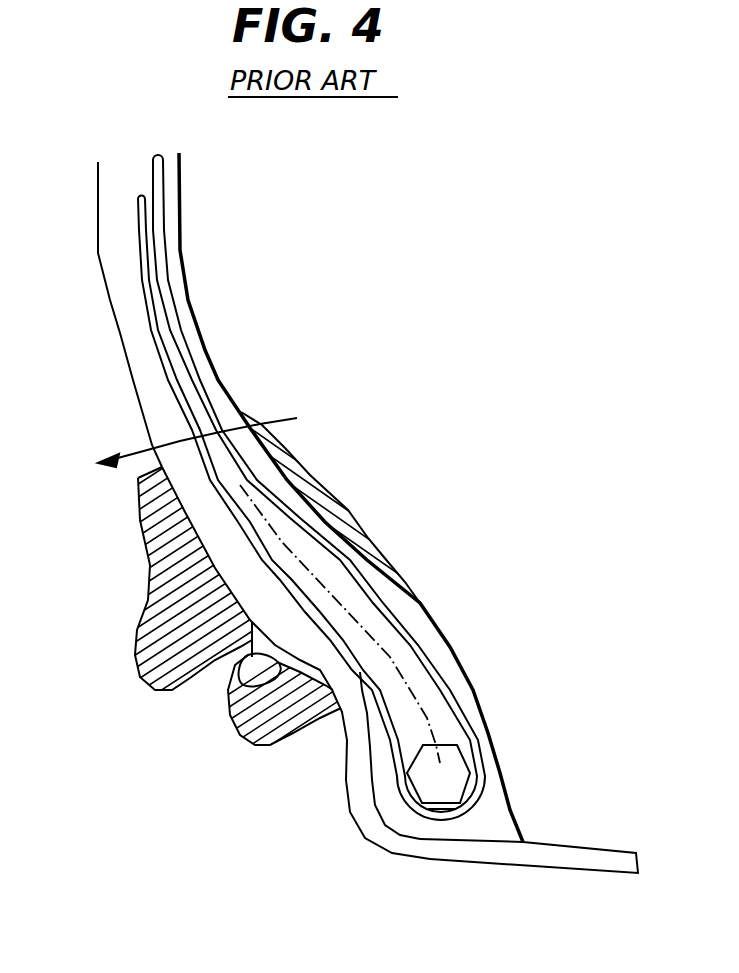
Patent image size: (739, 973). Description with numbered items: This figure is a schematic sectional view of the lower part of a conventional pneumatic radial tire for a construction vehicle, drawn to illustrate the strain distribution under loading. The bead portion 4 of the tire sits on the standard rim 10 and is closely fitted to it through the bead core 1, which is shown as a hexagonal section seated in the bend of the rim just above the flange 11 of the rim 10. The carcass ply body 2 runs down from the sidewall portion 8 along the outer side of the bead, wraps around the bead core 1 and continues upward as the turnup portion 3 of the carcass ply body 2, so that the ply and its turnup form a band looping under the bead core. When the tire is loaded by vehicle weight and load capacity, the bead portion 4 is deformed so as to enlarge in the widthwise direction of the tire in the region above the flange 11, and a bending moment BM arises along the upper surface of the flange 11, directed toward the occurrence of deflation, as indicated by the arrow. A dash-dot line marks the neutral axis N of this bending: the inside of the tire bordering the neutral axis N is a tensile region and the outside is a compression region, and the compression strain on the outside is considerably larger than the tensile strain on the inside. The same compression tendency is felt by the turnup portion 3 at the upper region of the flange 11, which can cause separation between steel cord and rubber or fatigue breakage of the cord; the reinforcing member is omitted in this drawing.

The bead core 1 is at (457, 775).
The carcass ply body 2 is at (400, 614).
The turnup portion 3 is at (155, 332).
The bead portion 4 is at (210, 527).
The sidewall portion 8 is at (108, 186).
The standard rim 10 is at (565, 862).
The flange 11 is at (343, 757).
The neutral axis N is at (417, 693).
The bending moment BM is at (246, 424).